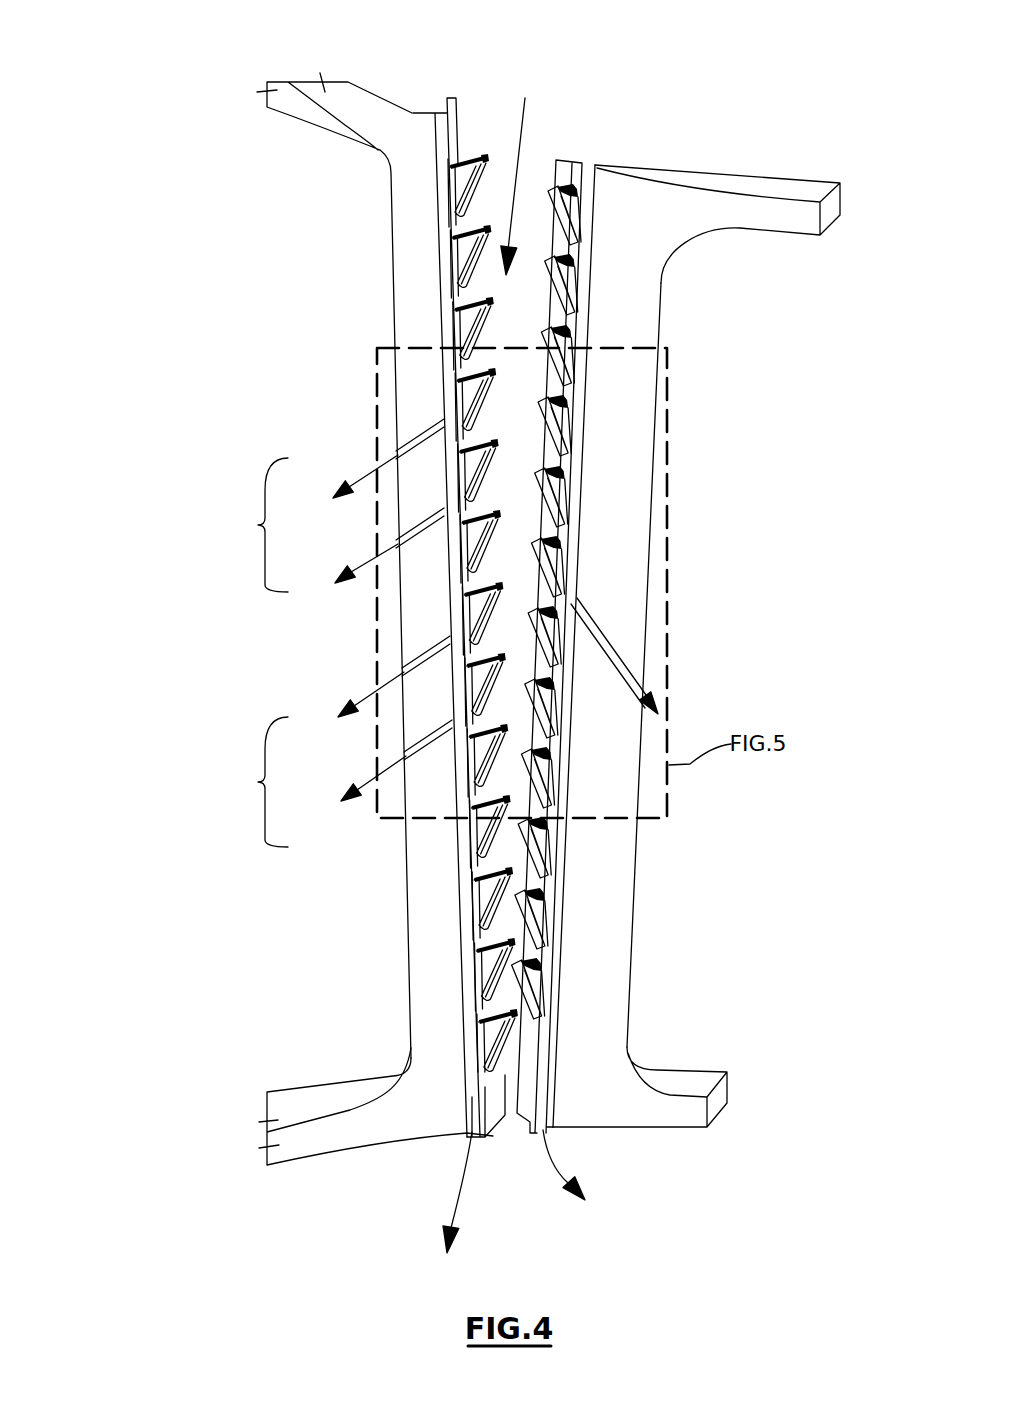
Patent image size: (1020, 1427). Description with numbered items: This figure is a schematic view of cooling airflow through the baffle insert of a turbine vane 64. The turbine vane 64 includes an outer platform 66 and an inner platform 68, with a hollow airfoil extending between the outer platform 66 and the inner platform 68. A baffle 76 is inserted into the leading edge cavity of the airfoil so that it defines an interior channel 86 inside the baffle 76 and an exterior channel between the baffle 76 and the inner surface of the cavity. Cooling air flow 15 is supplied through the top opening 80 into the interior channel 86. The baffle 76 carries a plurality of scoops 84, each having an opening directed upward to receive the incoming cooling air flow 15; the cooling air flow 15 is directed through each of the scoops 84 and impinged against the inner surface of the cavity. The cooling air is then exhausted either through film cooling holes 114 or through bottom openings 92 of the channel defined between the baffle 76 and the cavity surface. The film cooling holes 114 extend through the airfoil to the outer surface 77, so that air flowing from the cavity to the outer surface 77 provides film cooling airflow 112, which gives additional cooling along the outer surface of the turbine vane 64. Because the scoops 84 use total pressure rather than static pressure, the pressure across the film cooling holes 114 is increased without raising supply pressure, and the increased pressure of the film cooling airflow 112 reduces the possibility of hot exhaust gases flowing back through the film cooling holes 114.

The cooling air flow 15 is at (545, 127).
The turbine vane 64 is at (400, 233).
The outer platform 66 is at (300, 100).
The inner platform 68 is at (280, 1145).
The baffle 76 is at (580, 207).
The outer surface 77 is at (410, 980).
The top opening 80 is at (463, 88).
The scoops 84 is at (562, 187).
The interior channel 86 is at (523, 313).
The bottom openings 92 is at (475, 1147).
The film cooling airflow 112 is at (257, 525).
The film cooling holes 114 is at (452, 500).